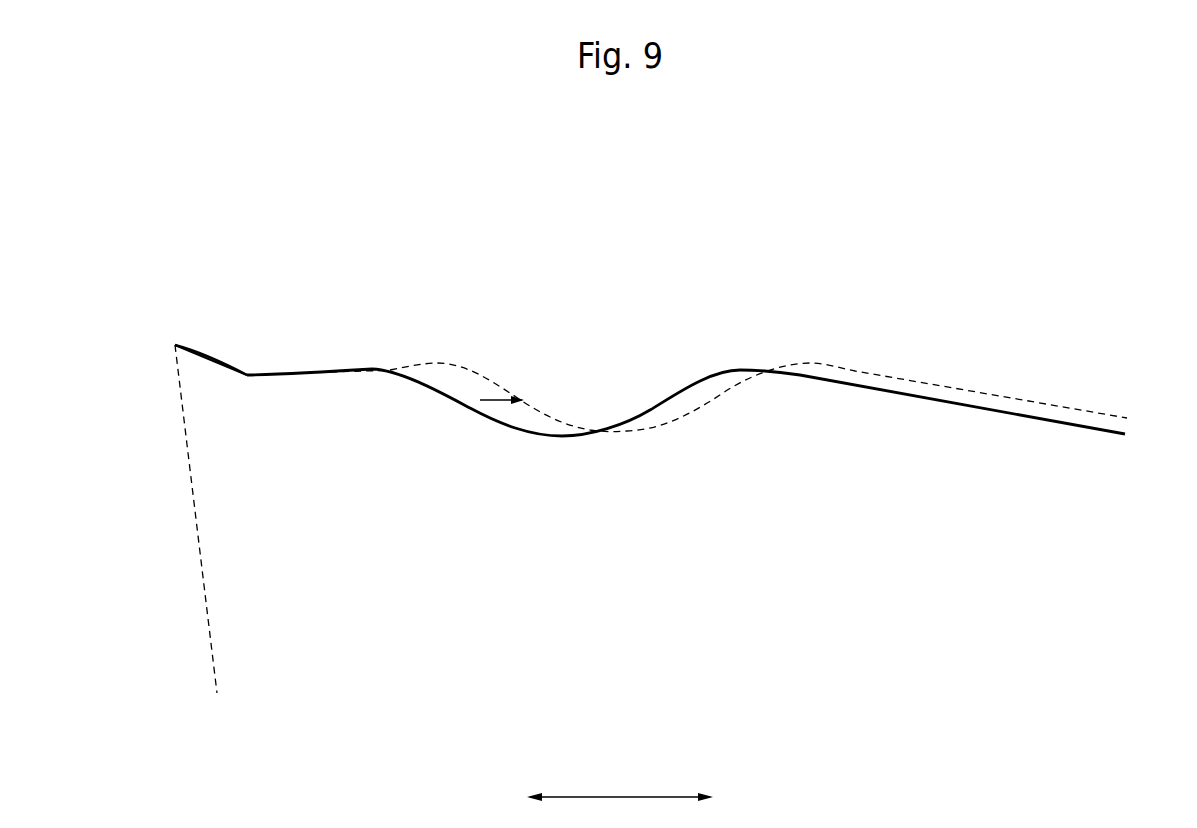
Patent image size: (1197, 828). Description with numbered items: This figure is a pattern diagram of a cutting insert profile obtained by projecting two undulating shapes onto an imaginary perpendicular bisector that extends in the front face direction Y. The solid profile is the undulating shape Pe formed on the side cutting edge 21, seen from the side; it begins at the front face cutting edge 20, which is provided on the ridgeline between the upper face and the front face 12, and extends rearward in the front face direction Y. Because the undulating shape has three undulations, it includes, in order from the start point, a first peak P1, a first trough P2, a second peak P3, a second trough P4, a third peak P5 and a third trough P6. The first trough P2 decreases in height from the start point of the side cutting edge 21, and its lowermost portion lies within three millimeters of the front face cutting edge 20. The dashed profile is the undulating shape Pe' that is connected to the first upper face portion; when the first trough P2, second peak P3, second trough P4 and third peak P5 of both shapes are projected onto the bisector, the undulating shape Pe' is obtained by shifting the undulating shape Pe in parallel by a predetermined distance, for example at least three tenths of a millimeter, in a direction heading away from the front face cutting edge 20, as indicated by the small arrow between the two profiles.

The front face 12 is at (198, 568).
The front face cutting edge 20 is at (176, 343).
The side cutting edge 21 is at (677, 393).
The first peak P1 is at (175, 343).
The first trough P2 is at (250, 376).
The second peak P3 is at (388, 372).
The second trough P4 is at (557, 437).
The third peak P5 is at (738, 368).
The third trough P6 is at (1125, 435).
The undulating shape Pe is at (350, 283).
The undulating shape Pe' is at (728, 330).
The front face direction Y is at (620, 779).